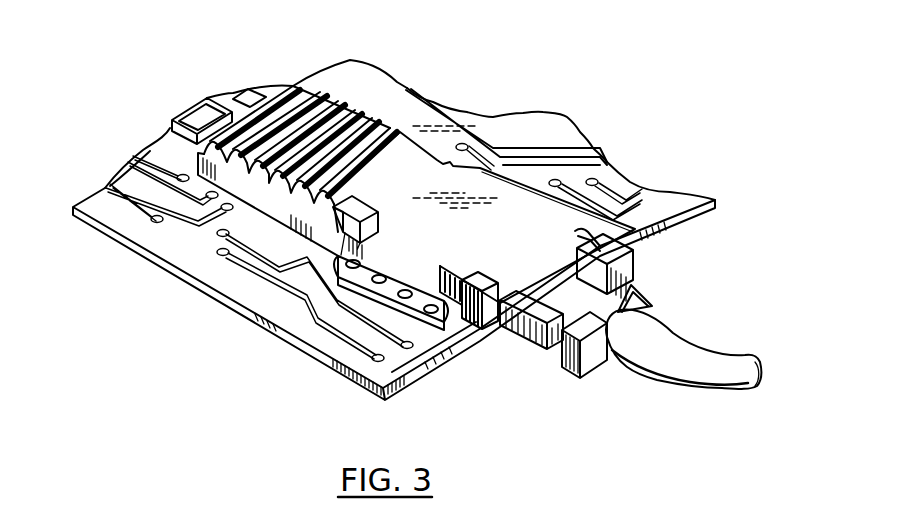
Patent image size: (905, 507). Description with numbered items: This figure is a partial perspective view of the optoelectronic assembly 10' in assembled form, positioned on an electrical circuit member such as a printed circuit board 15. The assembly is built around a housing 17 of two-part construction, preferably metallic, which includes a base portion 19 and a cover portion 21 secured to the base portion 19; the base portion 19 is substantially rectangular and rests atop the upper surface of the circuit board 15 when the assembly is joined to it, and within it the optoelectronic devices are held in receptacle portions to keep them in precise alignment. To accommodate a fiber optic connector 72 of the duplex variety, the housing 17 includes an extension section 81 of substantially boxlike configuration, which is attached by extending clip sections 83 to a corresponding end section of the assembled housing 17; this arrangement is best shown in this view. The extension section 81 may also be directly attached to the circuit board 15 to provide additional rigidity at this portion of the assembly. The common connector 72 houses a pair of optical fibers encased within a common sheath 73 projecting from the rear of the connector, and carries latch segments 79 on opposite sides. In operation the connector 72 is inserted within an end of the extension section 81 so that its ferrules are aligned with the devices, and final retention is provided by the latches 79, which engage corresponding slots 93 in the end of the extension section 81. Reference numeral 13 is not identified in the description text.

The optoelectronic assembly 10' is at (410, 101).
The printed circuit board 13 is at (313, 371).
The circuit board 15 is at (427, 368).
The housing 17 is at (217, 100).
The base portion 19 is at (163, 143).
The cover portion 21 is at (297, 83).
The fiber optic connector 72 is at (637, 262).
The common sheath 73 is at (713, 385).
The latch segments 79 is at (521, 395).
The extension section 81 is at (505, 251).
The clip sections 83 is at (340, 210).
The slots 93 is at (595, 237).